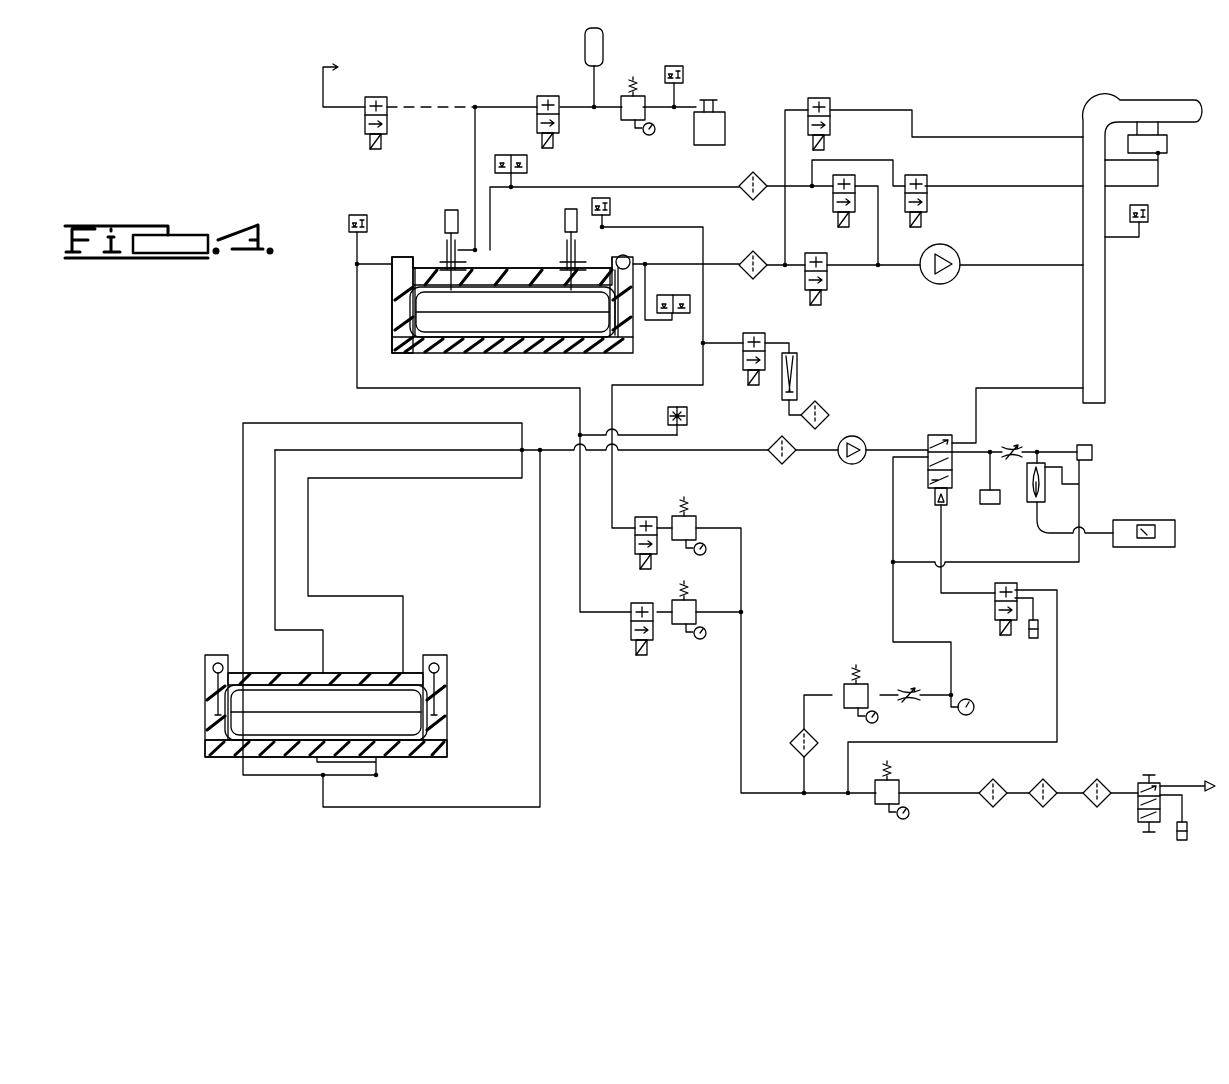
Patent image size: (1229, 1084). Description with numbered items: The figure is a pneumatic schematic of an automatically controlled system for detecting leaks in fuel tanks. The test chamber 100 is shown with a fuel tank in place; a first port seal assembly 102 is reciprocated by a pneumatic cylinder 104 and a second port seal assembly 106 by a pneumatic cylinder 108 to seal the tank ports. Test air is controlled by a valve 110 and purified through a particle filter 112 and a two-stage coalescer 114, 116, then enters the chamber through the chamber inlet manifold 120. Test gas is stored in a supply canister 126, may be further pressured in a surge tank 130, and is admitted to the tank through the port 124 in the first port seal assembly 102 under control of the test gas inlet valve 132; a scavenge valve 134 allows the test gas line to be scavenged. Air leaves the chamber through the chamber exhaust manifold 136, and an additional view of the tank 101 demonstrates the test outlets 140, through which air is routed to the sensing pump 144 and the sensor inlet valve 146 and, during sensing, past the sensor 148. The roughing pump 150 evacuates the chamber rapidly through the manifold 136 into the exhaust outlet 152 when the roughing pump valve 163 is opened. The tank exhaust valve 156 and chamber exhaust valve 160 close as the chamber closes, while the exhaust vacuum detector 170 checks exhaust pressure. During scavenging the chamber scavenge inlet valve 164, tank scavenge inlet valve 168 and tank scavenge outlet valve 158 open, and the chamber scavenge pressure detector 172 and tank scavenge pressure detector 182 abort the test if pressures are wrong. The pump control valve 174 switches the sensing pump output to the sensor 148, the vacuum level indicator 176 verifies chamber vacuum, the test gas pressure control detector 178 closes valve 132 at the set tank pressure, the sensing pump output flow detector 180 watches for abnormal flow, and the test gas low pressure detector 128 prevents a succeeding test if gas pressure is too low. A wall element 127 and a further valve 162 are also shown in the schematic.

The test chamber 100 is at (463, 362).
The additional view of the tank inside the chamber 101 is at (468, 701).
The first port seal assembly 102 is at (444, 255).
The pneumatic cylinder 104 is at (452, 210).
The second port seal assembly 106 is at (567, 260).
The pneumatic cylinder 108 is at (565, 218).
The valve 110 is at (1152, 784).
The particle filter 112 is at (1090, 808).
The two-stage coalescer 114 is at (1038, 808).
The two-stage coalescer 116 is at (988, 808).
The chamber inlet manifold 120 is at (392, 262).
The port 124 is at (460, 253).
The supply canister 126 is at (694, 135).
The mold wall 127 is at (585, 258).
The test gas low pressure detector 128 is at (681, 68).
The surge tank 130 is at (585, 40).
The test gas inlet valve 132 is at (546, 96).
The scavenge valve 134 is at (378, 97).
The chamber exhaust manifold 136 is at (632, 262).
The test outlets 140 is at (245, 680).
The sensing pump 144 is at (850, 436).
The sensor inlet valve 146 is at (936, 435).
The sensor 148 is at (1042, 498).
The roughing pump 150 is at (950, 250).
The exhaust outlet 152 is at (1105, 330).
The tank exhaust valve 156 is at (846, 176).
The tank scavenge outlet valve 158 is at (926, 180).
The chamber exhaust valve 160 is at (823, 98).
The valve 162 is at (995, 604).
The roughing pump valve 163 is at (825, 256).
The chamber scavenge inlet valve 164 is at (631, 632).
The tank scavenge inlet valve 168 is at (647, 517).
The exhaust vacuum detector 170 is at (1149, 214).
The chamber scavenge pressure detector 172 is at (685, 296).
The pump control valve 174 is at (690, 418).
The vacuum level indicator 176 is at (355, 215).
The test gas pressure control detector 178 is at (613, 210).
The sensing pump output flow detector 180 is at (988, 504).
The tank scavenge pressure detector 182 is at (505, 156).